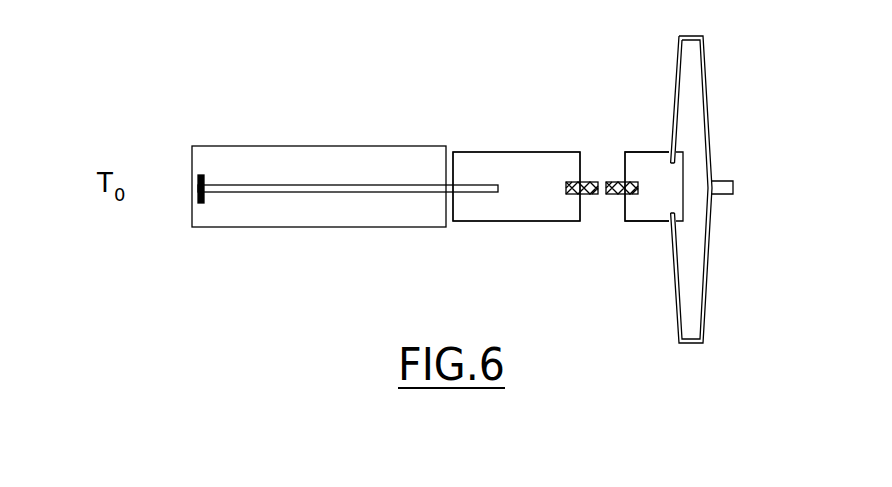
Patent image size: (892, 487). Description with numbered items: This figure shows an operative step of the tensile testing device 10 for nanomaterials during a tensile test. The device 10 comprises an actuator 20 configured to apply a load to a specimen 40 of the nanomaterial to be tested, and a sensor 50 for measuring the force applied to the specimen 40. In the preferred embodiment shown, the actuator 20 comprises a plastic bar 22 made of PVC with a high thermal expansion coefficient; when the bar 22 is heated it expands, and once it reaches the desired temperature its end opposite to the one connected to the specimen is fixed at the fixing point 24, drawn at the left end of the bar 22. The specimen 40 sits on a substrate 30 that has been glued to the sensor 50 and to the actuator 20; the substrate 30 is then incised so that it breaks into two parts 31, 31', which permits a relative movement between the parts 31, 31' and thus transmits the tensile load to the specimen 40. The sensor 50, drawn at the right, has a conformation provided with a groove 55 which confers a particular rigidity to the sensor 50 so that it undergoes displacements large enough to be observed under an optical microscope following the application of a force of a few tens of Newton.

The tool assembly 10 is at (361, 106).
The actuator 20 is at (242, 158).
The plastic bar 22 is at (318, 192).
The fixing point 24 is at (197, 187).
The substrate 30 is at (482, 238).
The substrate part 31 is at (516, 232).
The substrate part 31' is at (646, 233).
The specimen 40 is at (635, 163).
The sensor 50 is at (674, 100).
The groove 55 is at (699, 116).